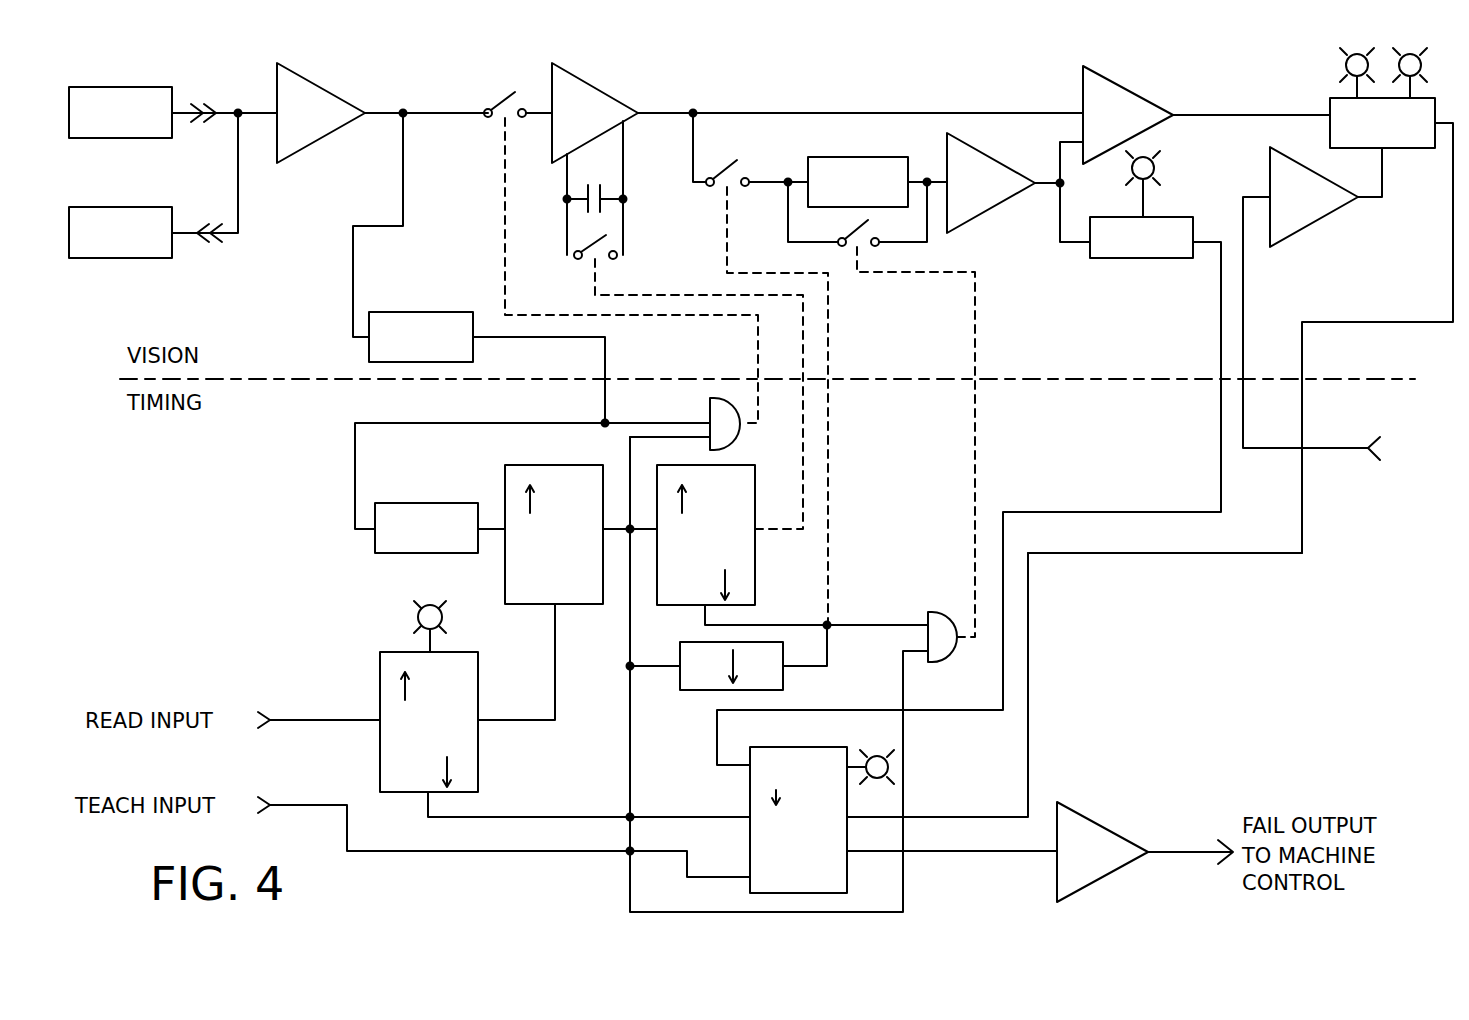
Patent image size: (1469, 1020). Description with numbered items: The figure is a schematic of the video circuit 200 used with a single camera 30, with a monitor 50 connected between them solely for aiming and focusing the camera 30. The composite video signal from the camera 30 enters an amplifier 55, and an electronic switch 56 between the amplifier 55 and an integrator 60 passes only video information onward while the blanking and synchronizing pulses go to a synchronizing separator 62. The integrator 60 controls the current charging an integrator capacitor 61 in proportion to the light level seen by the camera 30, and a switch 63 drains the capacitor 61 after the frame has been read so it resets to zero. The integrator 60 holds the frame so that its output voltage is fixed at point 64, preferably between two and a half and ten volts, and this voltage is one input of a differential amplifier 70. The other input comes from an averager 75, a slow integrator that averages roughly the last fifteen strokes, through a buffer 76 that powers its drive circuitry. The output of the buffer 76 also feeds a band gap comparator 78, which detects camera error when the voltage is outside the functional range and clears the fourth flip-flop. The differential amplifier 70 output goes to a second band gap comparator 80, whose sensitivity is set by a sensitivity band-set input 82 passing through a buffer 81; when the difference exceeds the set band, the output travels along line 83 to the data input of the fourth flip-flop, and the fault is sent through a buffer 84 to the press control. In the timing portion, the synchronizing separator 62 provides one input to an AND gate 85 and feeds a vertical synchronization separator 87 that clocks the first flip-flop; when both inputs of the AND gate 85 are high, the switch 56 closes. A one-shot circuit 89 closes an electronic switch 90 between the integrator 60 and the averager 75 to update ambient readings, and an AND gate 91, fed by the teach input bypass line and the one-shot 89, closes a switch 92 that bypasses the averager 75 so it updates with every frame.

The camera 30 is at (102, 125).
The monitor 50 is at (110, 237).
The amplifier 55 is at (298, 98).
The electronic switch 56 is at (508, 93).
The integrator 60 is at (575, 93).
The integrator capacitor 61 is at (603, 190).
The synchronizing separator 62 is at (393, 325).
The switch 63 is at (595, 257).
The point 64 is at (693, 112).
The differential amplifier 70 is at (1117, 102).
The averager 75 is at (818, 173).
The buffer 76 is at (972, 193).
The band gap comparator 78 is at (983, 458).
The band gap comparator 80 is at (1150, 432).
The buffer 81 is at (1295, 218).
The sensitivity band-set input 82 is at (1378, 457).
The line 83 is at (1088, 553).
The buffer 84 is at (1080, 862).
The AND gate 85 is at (725, 433).
The vertical synchronization separator 87 is at (393, 518).
The one-shot circuit 89 is at (765, 683).
The electronic switch 90 is at (718, 180).
The AND gate 91 is at (947, 637).
The switch 92 is at (852, 230).
The video circuit 200 is at (965, 88).